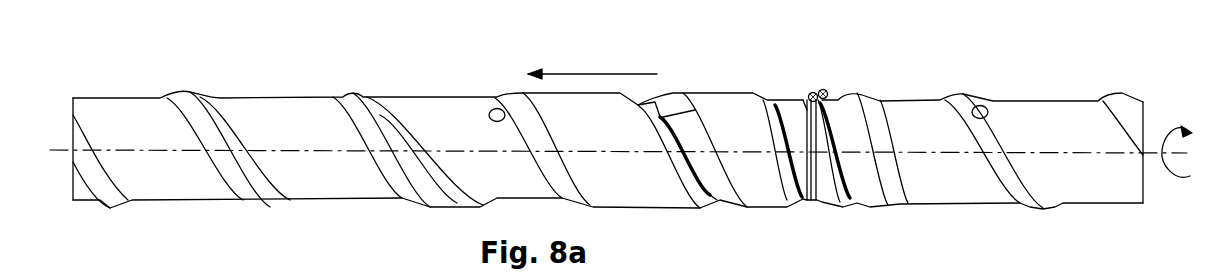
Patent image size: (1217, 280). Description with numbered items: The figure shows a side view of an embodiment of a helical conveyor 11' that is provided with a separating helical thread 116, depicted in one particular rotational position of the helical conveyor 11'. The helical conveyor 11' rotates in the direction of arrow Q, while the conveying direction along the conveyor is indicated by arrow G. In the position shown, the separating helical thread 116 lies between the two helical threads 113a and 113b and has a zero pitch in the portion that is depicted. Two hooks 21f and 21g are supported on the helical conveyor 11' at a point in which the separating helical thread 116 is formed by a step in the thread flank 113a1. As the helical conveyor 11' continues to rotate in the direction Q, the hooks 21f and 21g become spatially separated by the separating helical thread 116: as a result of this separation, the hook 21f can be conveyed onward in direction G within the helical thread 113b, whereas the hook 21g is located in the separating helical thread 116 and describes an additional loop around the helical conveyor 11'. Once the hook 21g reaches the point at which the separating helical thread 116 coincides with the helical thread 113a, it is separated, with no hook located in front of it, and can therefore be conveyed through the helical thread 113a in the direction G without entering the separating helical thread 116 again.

The helical conveyor 11' is at (618, 111).
The thread flank 113a1 is at (803, 108).
The hook 21f is at (812, 93).
The hook 21g is at (827, 90).
The helical thread 113b is at (800, 212).
The separating helical thread 116 is at (820, 212).
The helical thread 113a is at (862, 210).
The conveying direction G is at (577, 74).
The direction of rotation Q is at (1172, 125).